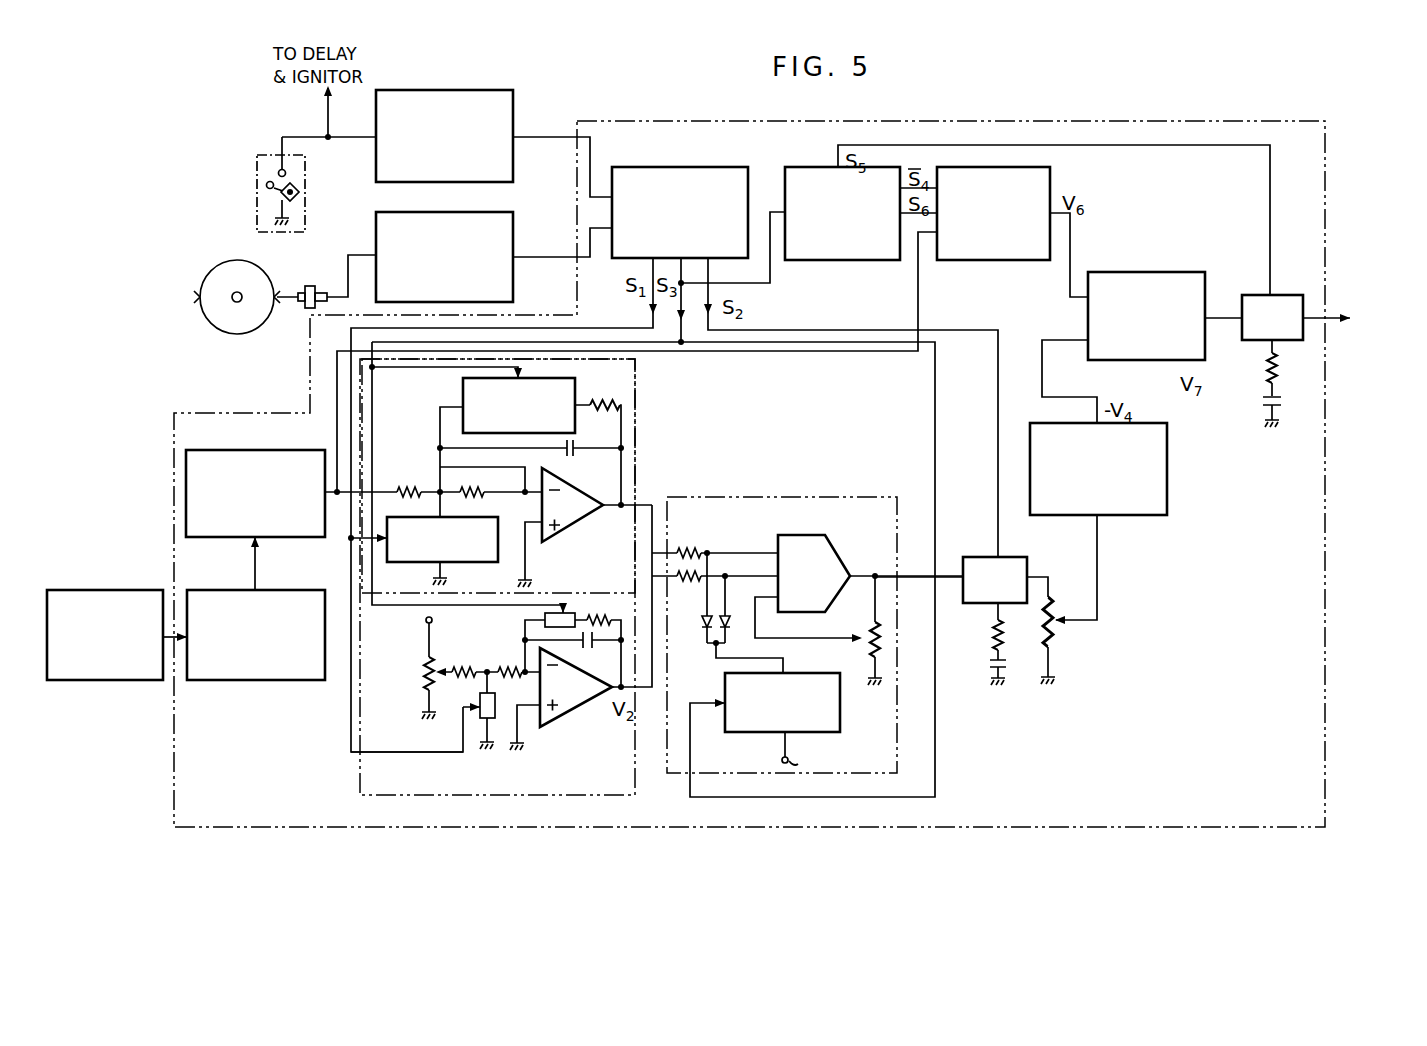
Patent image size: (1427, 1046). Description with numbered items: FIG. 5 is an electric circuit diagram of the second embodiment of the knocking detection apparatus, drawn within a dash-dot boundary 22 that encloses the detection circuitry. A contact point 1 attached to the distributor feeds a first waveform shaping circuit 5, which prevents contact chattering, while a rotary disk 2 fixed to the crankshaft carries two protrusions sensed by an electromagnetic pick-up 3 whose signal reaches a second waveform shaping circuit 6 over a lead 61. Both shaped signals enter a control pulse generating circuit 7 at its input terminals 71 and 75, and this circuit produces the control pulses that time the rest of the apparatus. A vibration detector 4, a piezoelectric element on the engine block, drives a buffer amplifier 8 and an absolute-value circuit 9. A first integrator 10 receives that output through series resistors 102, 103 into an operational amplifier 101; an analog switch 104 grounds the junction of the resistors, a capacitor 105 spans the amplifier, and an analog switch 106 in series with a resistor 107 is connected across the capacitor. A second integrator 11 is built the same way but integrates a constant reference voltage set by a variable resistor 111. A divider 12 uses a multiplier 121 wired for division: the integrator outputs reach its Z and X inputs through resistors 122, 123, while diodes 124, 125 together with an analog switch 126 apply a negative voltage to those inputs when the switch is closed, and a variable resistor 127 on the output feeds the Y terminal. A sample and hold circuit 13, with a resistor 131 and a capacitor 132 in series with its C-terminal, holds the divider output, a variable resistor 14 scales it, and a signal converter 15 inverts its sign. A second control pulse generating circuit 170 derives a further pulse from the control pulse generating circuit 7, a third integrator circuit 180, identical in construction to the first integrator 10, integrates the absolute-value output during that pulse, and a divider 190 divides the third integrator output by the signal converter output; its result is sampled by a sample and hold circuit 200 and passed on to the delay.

The contact point 1 is at (258, 170).
The rotary disk 2 is at (207, 320).
The electromagnetic pick-up 3 is at (305, 308).
The vibration detector 4 is at (133, 680).
The first waveform shaping circuit 5 is at (513, 110).
The second waveform shaping circuit 6 is at (513, 238).
The control pulse generating circuit 7 is at (717, 167).
The buffer amplifier 8 is at (294, 680).
The absolute-value circuit 9 is at (274, 430).
The first integrator 10 is at (637, 460).
The second integrator 11 is at (360, 772).
The divider 12 is at (818, 497).
The sample and hold circuit 13 is at (1010, 558).
The variable resistor 14 is at (1056, 627).
The signal converter 15 is at (1168, 493).
The knock detection circuit 22 is at (700, 120).
The signal line 61 is at (357, 246).
The input terminal 71 is at (598, 190).
The input terminal 75 is at (599, 230).
The operational amplifier 101 is at (584, 517).
The resistor 102 is at (413, 488).
The resistor 103 is at (484, 490).
The analog switch 104 is at (499, 562).
The capacitor 105 is at (575, 454).
The analog switch 106 is at (463, 392).
The resistor 107 is at (598, 387).
The variable resistor 111 is at (424, 676).
The multiplier 121 is at (856, 550).
The resistor 122 is at (679, 551).
The resistor 123 is at (698, 577).
The diode 124 is at (703, 630).
The diode 125 is at (733, 625).
The analog switch 126 is at (842, 724).
The variable resistor 127 is at (885, 648).
The resistor 131 is at (993, 642).
The capacitor 132 is at (1014, 668).
The second control pulse generating circuit 170 is at (817, 167).
The third integrator circuit 180 is at (1036, 165).
The divider 190 is at (1180, 272).
The sample and hold circuit 200 is at (1300, 284).